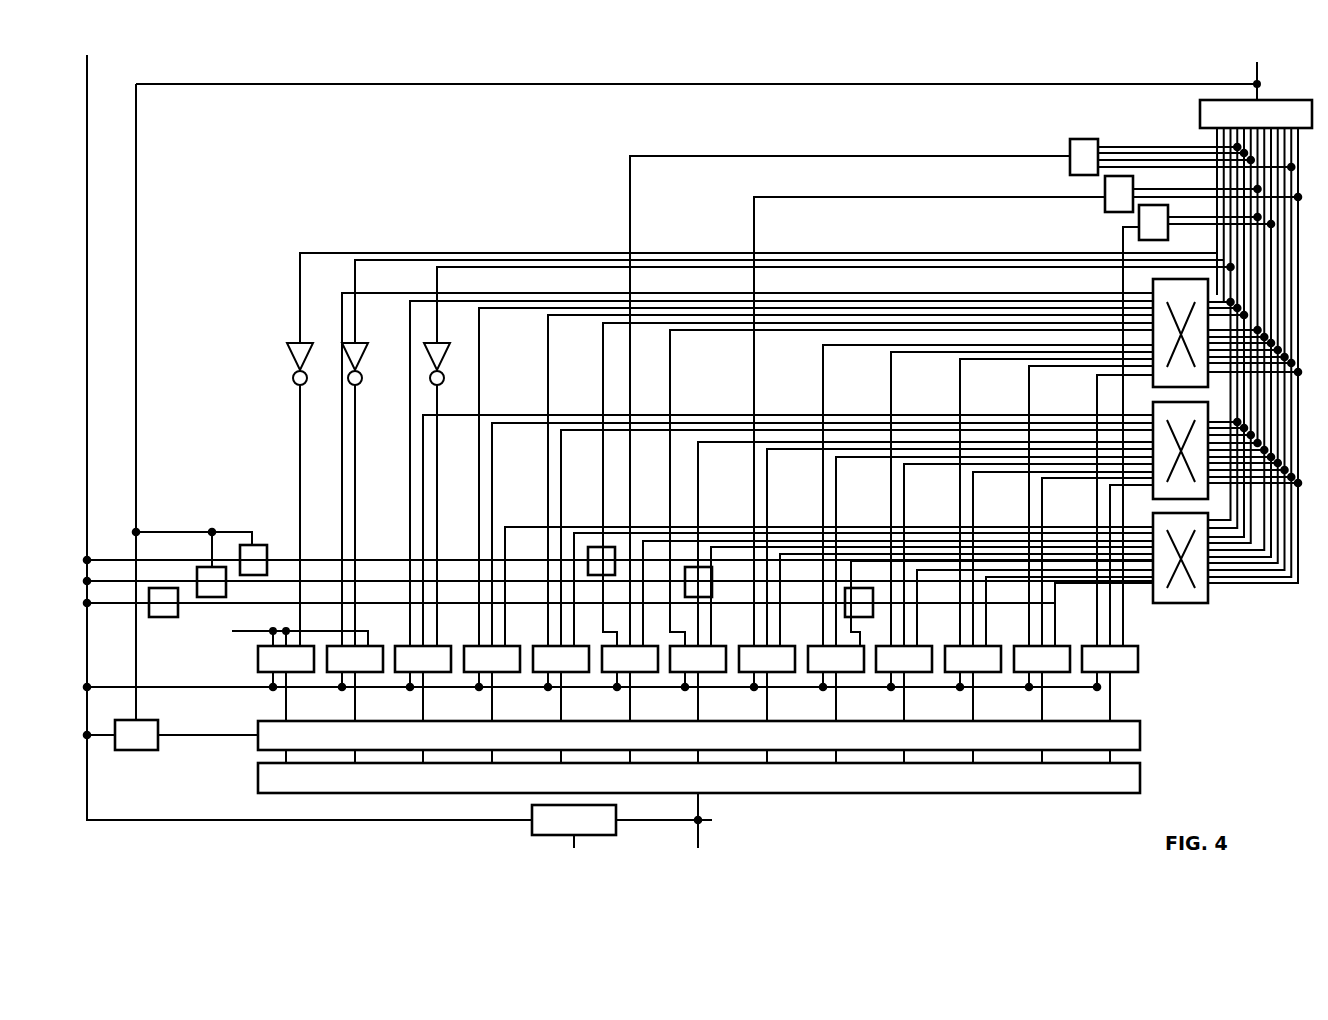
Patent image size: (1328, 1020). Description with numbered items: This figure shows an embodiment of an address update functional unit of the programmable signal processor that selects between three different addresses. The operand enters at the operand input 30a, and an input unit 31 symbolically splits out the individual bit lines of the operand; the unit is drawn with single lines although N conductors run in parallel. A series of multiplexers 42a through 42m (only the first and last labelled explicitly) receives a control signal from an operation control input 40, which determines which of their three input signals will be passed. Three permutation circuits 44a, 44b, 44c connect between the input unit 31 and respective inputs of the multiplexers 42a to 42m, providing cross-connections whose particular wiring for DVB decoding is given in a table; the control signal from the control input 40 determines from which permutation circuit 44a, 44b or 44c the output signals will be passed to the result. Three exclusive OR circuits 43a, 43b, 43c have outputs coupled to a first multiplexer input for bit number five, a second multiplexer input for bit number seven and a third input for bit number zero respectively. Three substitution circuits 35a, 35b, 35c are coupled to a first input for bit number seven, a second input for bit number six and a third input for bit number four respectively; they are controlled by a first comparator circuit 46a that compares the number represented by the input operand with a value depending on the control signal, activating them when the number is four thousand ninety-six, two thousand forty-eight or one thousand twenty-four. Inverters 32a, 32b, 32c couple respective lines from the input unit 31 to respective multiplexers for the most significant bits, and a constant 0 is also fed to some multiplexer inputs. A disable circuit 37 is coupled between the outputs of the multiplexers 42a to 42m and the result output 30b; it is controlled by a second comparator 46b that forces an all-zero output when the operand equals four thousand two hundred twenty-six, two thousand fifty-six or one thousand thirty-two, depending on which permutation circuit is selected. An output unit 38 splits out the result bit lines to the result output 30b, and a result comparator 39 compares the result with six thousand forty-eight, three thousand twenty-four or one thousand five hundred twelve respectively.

The operation control input 40 is at (88, 72).
The operand input 30a is at (1254, 73).
The input unit 31 is at (1200, 115).
The exclusive OR circuit 43a is at (1070, 149).
The exclusive OR circuit 43b is at (1105, 194).
The exclusive OR circuit 43c is at (1136, 229).
The inverter 32a is at (287, 351).
The inverter 32b is at (368, 364).
The inverter 32c is at (451, 355).
The permutation circuit 44a is at (1153, 381).
The permutation circuit 44b is at (1153, 491).
The permutation circuit 44c is at (1182, 603).
The first comparator circuit 46a is at (251, 545).
The second comparator 46b is at (136, 750).
The substitution circuit 35a is at (592, 547).
The substitution circuit 35b is at (703, 567).
The substitution circuit 35c is at (861, 588).
The constant zero input 0 is at (290, 633).
The multiplexer 42a is at (258, 660).
The multiplexer 42m is at (1138, 660).
The disable circuit 37 is at (1140, 737).
The output unit 38 is at (980, 793).
The result comparator 39 is at (532, 825).
The result output 30b is at (712, 827).